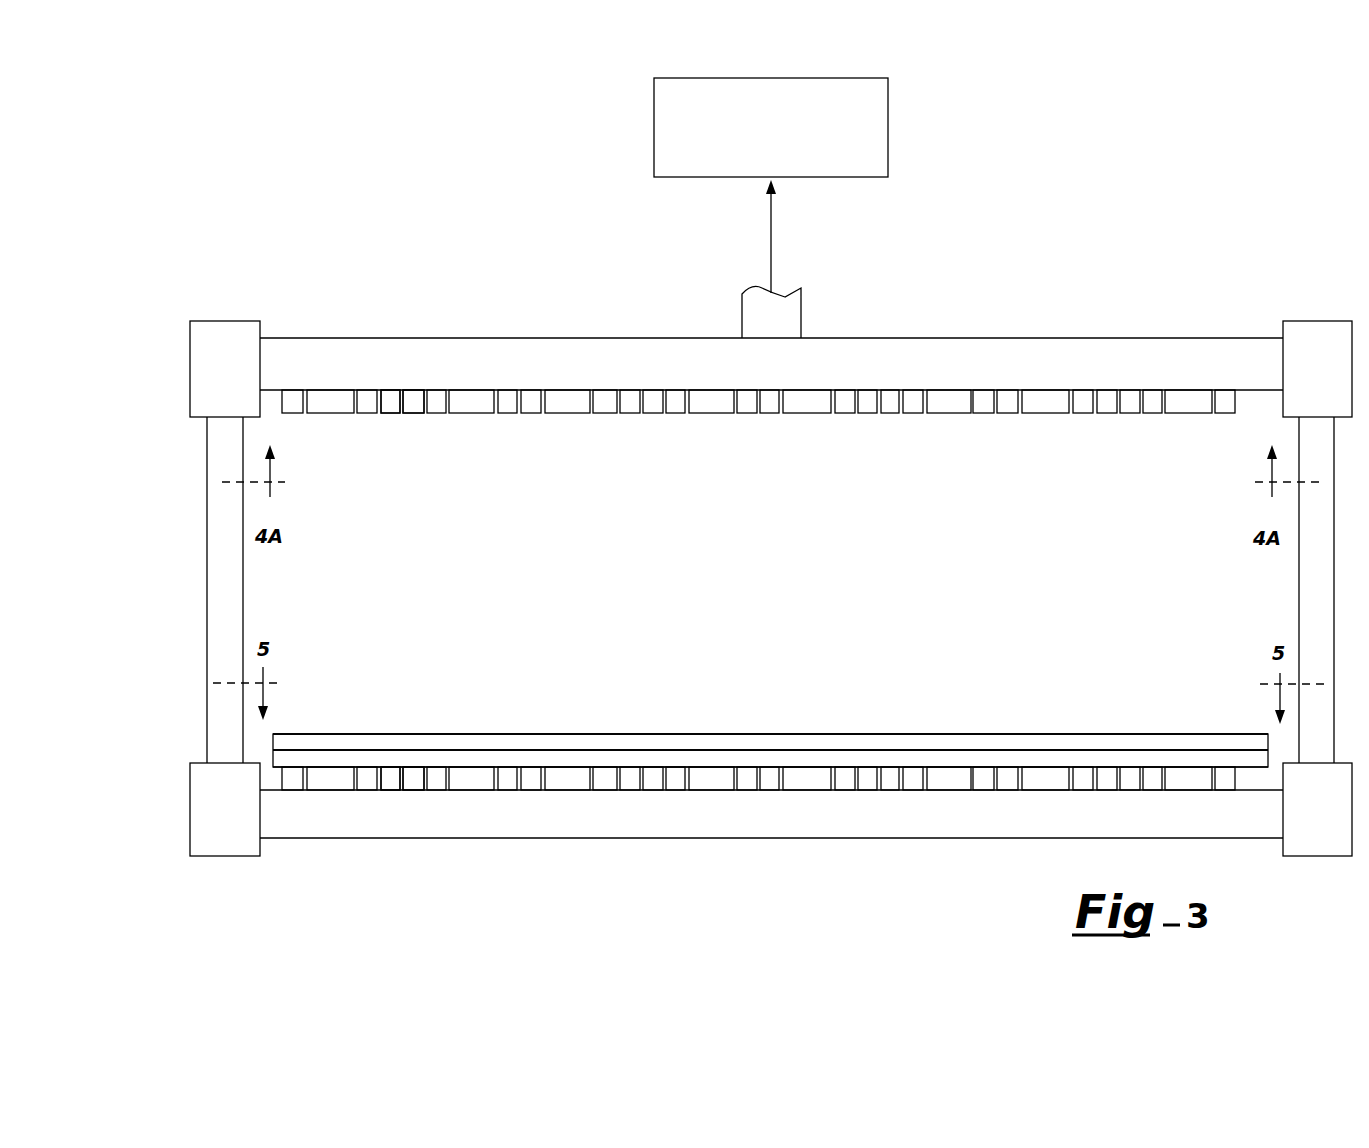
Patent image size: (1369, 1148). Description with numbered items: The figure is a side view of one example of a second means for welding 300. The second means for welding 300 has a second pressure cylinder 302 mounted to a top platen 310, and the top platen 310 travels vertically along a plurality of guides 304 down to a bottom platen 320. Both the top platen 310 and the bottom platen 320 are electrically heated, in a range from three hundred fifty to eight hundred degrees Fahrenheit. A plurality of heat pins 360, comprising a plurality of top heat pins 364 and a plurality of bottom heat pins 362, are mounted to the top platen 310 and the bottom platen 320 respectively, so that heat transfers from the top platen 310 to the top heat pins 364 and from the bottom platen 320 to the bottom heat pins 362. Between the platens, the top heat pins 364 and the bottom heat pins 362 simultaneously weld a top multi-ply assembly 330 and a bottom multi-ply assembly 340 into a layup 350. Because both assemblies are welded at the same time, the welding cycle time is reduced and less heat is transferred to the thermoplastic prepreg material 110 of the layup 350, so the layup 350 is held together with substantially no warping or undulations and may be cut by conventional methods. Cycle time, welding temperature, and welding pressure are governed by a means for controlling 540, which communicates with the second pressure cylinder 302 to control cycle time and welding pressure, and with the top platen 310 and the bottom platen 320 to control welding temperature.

The second means for welding 300 is at (213, 258).
The means for controlling 540 is at (654, 126).
The second pressure cylinder 302 is at (742, 305).
The top platen 310 is at (1027, 360).
The bottom platen 320 is at (892, 816).
The guides 304 is at (207, 540).
The heat pins 360 is at (436, 437).
The top heat pins 364 is at (606, 420).
The bottom heat pins 362 is at (588, 800).
The layup 350 is at (376, 720).
The top multi-ply assembly 330 is at (884, 740).
The bottom multi-ply assembly 340 is at (970, 757).
The thermoplastic prepreg material 110 is at (1165, 733).